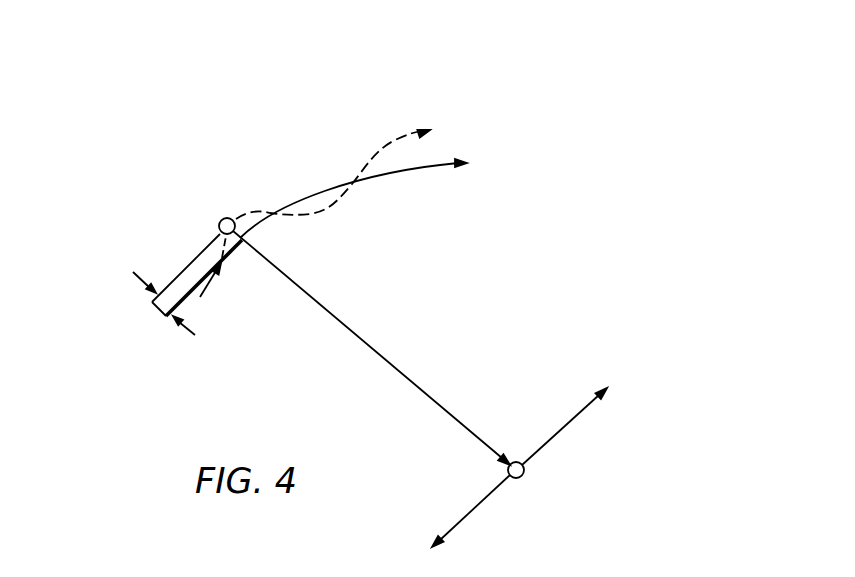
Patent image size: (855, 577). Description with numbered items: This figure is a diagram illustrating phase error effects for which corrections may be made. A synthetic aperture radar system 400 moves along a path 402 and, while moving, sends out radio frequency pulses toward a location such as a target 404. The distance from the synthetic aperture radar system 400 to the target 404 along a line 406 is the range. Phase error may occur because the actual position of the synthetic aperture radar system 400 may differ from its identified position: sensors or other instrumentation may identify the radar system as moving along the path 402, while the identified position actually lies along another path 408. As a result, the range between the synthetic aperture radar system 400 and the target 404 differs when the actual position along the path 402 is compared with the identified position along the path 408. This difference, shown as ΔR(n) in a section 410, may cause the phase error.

The synthetic aperture radar system 400 is at (223, 216).
The path 402 is at (395, 143).
The target 404 is at (517, 478).
The line 406 is at (372, 345).
The path 408 is at (407, 167).
The section 410 is at (185, 264).